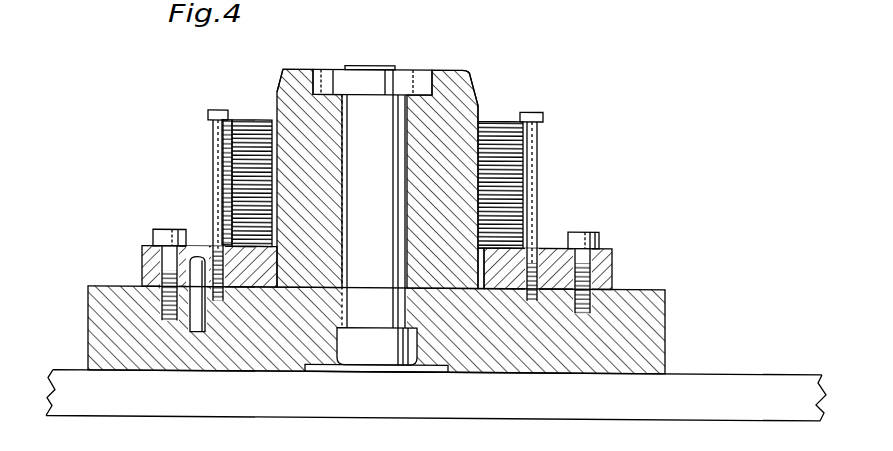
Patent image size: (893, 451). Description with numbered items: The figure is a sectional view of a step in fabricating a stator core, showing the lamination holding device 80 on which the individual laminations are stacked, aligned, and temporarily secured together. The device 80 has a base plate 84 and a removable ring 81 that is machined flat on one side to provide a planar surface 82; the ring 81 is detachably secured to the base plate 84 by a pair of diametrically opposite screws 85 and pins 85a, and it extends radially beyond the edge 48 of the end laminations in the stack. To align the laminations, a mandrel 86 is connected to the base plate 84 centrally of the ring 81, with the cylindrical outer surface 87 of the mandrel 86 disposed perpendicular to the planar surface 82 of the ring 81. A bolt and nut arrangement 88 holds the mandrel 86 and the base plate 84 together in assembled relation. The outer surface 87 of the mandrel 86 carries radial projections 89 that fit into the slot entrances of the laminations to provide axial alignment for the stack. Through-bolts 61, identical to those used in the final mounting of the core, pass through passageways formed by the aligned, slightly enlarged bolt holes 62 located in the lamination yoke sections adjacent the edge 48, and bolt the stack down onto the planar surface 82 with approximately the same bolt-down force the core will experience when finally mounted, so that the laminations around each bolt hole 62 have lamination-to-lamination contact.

The edge 48 is at (547, 246).
The through-bolts 61 is at (531, 112).
The bolt holes 62 is at (217, 134).
The lamination holding device 80 is at (668, 329).
The removable ring 81 is at (613, 262).
The planar surface 82 is at (555, 246).
The base plate 84 is at (640, 310).
The screws 85 is at (165, 231).
The pins 85a is at (197, 258).
The mandrel 86 is at (470, 74).
The cylindrical outer surface 87 is at (479, 120).
The bolt and nut arrangement 88 is at (386, 65).
The radial projections 89 is at (276, 109).